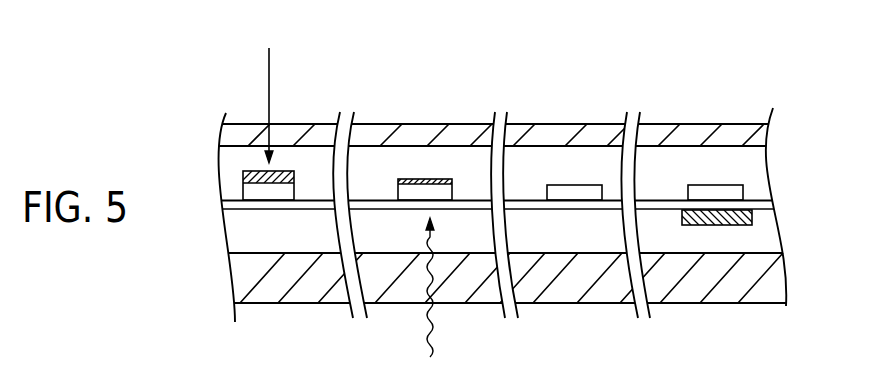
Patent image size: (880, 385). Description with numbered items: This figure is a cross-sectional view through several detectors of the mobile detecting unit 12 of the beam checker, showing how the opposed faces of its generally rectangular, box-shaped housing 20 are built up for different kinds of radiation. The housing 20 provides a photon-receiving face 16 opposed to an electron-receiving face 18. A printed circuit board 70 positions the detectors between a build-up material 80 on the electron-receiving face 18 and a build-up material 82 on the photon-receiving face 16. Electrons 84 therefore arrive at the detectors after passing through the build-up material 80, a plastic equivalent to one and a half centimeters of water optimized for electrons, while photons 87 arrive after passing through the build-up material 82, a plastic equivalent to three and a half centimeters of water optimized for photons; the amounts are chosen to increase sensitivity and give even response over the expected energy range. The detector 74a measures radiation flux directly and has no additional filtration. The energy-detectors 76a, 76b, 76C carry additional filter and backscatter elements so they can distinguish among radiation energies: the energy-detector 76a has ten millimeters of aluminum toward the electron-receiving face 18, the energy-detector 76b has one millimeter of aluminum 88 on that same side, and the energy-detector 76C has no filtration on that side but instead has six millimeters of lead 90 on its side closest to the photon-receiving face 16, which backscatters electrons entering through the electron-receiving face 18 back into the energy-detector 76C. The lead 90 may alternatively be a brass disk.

The mobile detecting unit 12 is at (745, 68).
The photon-receiving face 16 is at (712, 315).
The electron-receiving face 18 is at (692, 100).
The housing 20 is at (763, 133).
The printed circuit board 70 is at (533, 207).
The detector 74a is at (583, 190).
The energy-detector 76a is at (250, 189).
The energy-detector 76b is at (412, 190).
The energy-detector 76C is at (733, 193).
The build-up material 80 is at (515, 132).
The build-up material 82 is at (565, 290).
The electrons 84 is at (270, 78).
The photons 87 is at (422, 315).
The aluminum 88 is at (440, 182).
The lead 90 is at (752, 215).